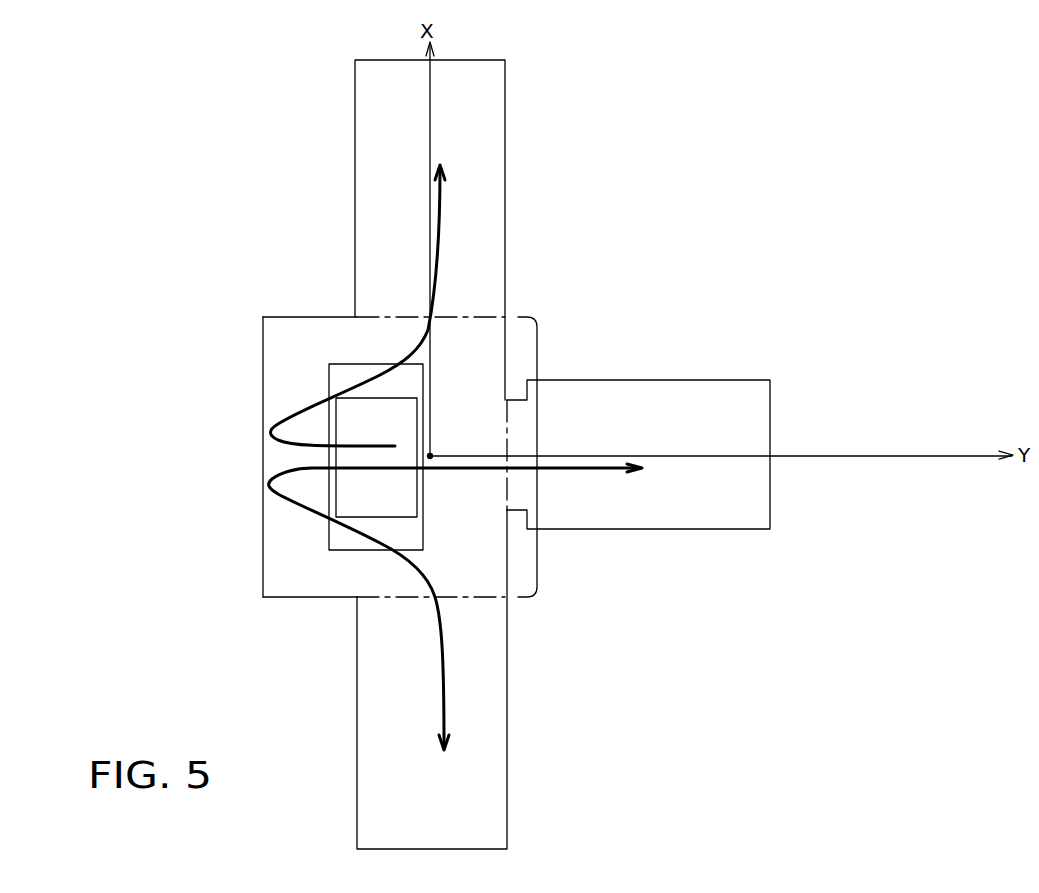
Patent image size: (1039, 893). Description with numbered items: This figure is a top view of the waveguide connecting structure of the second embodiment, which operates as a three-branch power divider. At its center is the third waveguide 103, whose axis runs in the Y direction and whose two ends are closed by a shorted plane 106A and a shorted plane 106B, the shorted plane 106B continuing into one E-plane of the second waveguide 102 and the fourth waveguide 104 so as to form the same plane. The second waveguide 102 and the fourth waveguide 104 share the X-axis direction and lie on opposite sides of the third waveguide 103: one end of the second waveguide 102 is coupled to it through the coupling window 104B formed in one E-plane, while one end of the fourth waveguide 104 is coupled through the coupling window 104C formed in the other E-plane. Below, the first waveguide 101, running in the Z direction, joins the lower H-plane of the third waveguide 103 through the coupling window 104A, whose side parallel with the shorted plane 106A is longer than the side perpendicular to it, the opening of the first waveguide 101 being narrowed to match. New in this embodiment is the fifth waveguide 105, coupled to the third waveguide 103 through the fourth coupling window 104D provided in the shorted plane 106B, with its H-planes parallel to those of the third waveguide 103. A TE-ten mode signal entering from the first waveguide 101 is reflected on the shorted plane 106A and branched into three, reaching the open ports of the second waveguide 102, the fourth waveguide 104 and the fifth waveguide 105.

The first waveguide 101 is at (423, 527).
The second waveguide 102 is at (507, 192).
The third waveguide 103 is at (233, 428).
The fourth waveguide 104 is at (510, 743).
The fifth waveguide 105 is at (772, 413).
The coupling window 104A is at (350, 423).
The coupling window 104B is at (478, 317).
The coupling window 104C is at (487, 597).
The fourth coupling window 104D is at (507, 420).
The shorted plane 106A is at (263, 550).
The shorted plane 106B is at (535, 402).